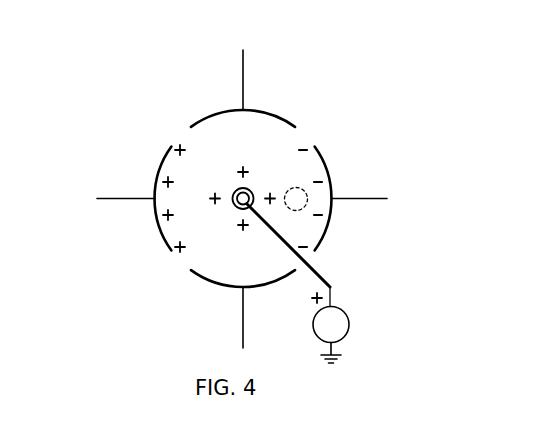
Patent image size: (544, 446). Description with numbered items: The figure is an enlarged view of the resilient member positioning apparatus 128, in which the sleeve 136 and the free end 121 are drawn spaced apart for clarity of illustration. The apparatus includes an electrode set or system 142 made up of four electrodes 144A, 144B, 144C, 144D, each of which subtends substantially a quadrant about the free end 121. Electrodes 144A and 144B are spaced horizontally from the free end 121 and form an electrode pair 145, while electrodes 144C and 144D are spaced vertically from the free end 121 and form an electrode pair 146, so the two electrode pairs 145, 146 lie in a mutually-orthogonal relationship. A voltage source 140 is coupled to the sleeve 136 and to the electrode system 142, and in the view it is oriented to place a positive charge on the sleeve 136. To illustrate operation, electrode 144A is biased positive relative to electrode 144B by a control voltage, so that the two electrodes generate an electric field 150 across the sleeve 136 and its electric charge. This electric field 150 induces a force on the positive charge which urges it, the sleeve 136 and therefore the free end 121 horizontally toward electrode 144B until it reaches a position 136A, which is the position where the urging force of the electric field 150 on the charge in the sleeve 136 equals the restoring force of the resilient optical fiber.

The positioning apparatus 128 is at (429, 109).
The electrode set or system 142 is at (193, 110).
The electrode 144A is at (157, 212).
The electrode 144B is at (330, 226).
The electrode 144C is at (276, 113).
The electrode 144D is at (225, 288).
The electrode pair 146 is at (230, 78).
The electrode pair 145 is at (100, 185).
The free end 121 is at (233, 192).
The sleeve 136 is at (254, 191).
The position 136A is at (295, 210).
The electric field 150 is at (279, 143).
The voltage source 140 is at (349, 323).